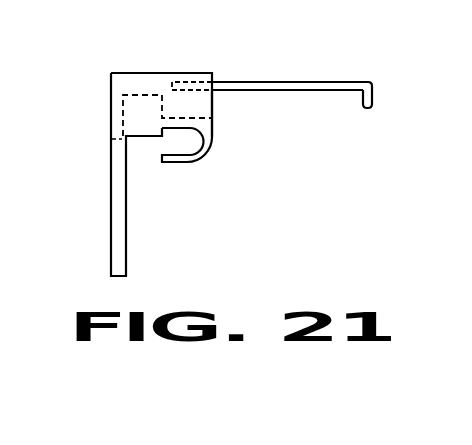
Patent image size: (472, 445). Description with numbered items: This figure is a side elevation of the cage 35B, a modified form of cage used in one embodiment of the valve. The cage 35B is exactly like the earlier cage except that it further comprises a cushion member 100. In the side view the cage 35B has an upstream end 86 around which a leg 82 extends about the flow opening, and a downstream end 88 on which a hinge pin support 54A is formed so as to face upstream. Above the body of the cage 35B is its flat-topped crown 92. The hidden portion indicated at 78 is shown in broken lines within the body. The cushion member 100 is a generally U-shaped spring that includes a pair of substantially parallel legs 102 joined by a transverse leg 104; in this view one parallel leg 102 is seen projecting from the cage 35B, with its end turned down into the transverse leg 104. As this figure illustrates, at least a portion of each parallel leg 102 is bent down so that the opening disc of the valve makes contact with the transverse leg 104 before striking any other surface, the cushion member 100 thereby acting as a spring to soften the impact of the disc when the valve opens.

The cage 35B is at (230, 142).
The hidden internal recess 78 is at (140, 100).
The upstream end 86 is at (111, 100).
The leg 82 is at (111, 240).
The hinge pin support 54A is at (180, 162).
The downstream end 88 is at (212, 97).
The flat-topped crown 92 is at (192, 72).
The parallel leg 102 is at (321, 83).
The cushion member 100 is at (364, 81).
The transverse leg 104 is at (367, 108).